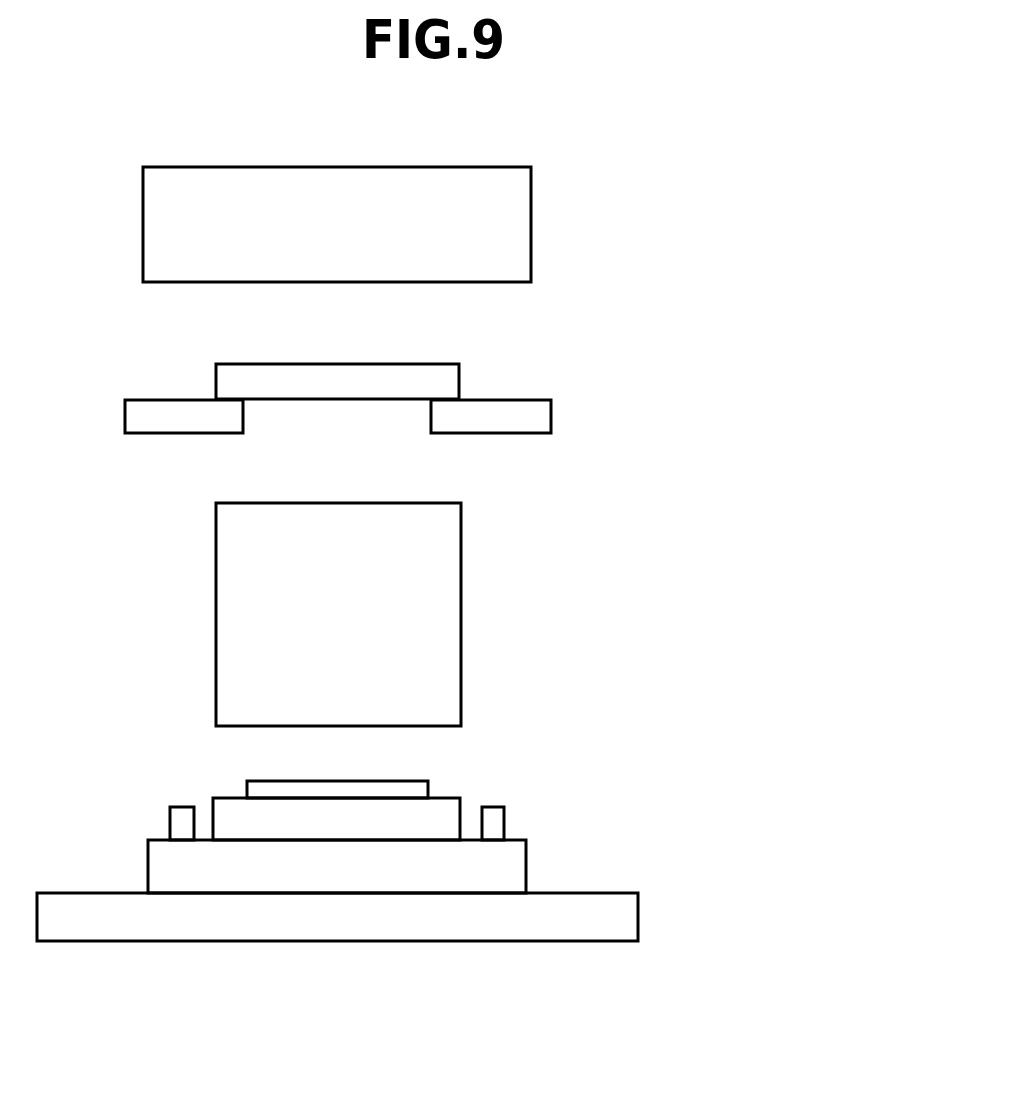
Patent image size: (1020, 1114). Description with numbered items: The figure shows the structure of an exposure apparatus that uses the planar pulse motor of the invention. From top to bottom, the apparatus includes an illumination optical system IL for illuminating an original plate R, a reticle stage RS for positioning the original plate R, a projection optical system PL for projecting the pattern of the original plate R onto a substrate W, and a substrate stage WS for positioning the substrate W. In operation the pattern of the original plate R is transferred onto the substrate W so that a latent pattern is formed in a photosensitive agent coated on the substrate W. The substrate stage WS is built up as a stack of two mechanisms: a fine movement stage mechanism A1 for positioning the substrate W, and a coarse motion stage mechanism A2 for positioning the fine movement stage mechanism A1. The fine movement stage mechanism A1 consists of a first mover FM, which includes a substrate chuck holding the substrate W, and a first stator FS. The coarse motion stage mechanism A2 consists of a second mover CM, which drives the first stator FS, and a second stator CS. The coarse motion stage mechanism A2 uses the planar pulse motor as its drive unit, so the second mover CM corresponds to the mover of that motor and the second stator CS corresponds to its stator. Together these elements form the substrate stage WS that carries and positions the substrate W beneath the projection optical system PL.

The illumination optical system IL is at (531, 231).
The original plate R is at (459, 372).
The reticle stage RS is at (551, 411).
The projection optical system PL is at (461, 604).
The substrate W is at (377, 780).
The first mover FM is at (442, 797).
The first stator FS is at (504, 820).
The second mover CM is at (503, 868).
The second stator CS is at (620, 924).
The fine movement stage mechanism A1 is at (487, 791).
The coarse motion stage mechanism A2 is at (421, 891).
The substrate stage WS is at (462, 842).